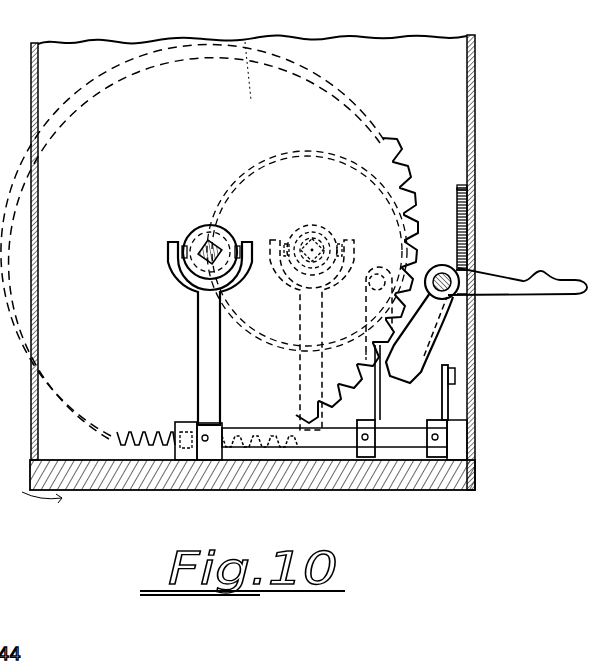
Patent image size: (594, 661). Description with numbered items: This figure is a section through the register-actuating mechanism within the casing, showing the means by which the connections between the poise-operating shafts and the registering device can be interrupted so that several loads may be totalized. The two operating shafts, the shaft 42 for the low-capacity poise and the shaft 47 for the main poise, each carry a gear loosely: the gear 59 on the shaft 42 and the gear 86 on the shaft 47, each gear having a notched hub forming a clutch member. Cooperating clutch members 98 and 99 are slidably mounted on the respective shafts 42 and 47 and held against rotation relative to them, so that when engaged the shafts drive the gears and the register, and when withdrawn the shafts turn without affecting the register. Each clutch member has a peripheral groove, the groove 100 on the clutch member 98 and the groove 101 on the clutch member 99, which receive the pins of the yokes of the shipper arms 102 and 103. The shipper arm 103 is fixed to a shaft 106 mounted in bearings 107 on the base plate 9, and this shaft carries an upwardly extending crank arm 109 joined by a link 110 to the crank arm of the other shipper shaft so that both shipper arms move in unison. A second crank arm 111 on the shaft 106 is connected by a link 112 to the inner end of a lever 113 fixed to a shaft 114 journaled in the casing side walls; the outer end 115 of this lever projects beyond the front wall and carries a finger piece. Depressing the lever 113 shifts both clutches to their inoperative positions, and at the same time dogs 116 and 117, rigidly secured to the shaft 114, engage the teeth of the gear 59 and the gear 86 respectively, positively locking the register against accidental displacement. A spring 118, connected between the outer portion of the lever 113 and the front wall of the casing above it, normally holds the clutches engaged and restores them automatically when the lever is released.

The base plate 9 is at (252, 475).
The shaft 42 is at (313, 240).
The shaft 47 is at (219, 244).
The gear 59 is at (230, 189).
The gear 86 is at (143, 432).
The clutch member 98 is at (303, 222).
The clutch member 99 is at (200, 228).
The peripheral groove 100 is at (334, 230).
The peripheral groove 101 is at (188, 247).
The shipper arm 102 is at (298, 393).
The shipper arm 103 is at (200, 320).
The shaft 106 is at (236, 432).
The bearings 107 is at (458, 461).
The crank arm 109 is at (446, 408).
The link 110 is at (450, 374).
The second crank arm 111 is at (365, 461).
The link 112 is at (366, 315).
The lever 113 is at (389, 262).
The shaft 114 is at (441, 266).
The outer end of lever 115 is at (535, 290).
The dog 116 is at (357, 280).
The dog 117 is at (418, 346).
The spring 118 is at (457, 222).